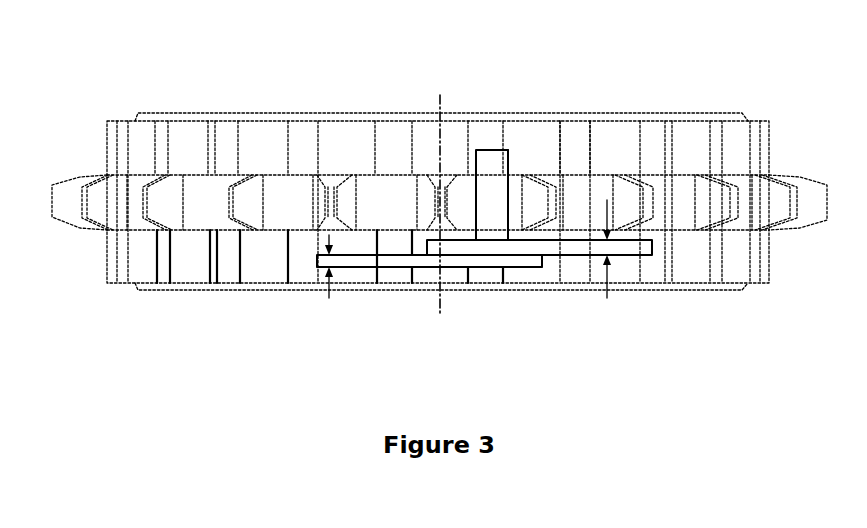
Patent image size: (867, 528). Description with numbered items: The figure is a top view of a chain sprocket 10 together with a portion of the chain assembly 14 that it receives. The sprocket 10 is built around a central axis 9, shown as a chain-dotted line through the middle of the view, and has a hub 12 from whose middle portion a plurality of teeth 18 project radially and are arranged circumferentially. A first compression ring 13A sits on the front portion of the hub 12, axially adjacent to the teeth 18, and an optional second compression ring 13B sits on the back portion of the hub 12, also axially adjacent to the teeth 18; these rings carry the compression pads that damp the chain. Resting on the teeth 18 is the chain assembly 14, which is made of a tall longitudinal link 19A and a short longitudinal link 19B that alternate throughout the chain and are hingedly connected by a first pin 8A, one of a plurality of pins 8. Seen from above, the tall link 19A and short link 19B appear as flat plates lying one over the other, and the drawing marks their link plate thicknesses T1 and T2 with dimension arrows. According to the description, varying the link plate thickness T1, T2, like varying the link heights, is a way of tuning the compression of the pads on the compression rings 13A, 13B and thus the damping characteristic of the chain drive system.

The chain sprocket 10 is at (184, 103).
The hub 12 is at (695, 113).
The teeth 18 is at (62, 190).
The second compression ring 13B is at (583, 136).
The first compression ring 13A is at (271, 268).
The central axis 9 is at (438, 100).
The pins 8 is at (480, 140).
The first pin 8A is at (508, 155).
The short longitudinal link 19B is at (547, 250).
The tall longitudinal link 19A is at (482, 262).
The chain assembly 14 is at (358, 278).
The link plate thickness T1 is at (329, 281).
The link plate thickness T2 is at (607, 264).